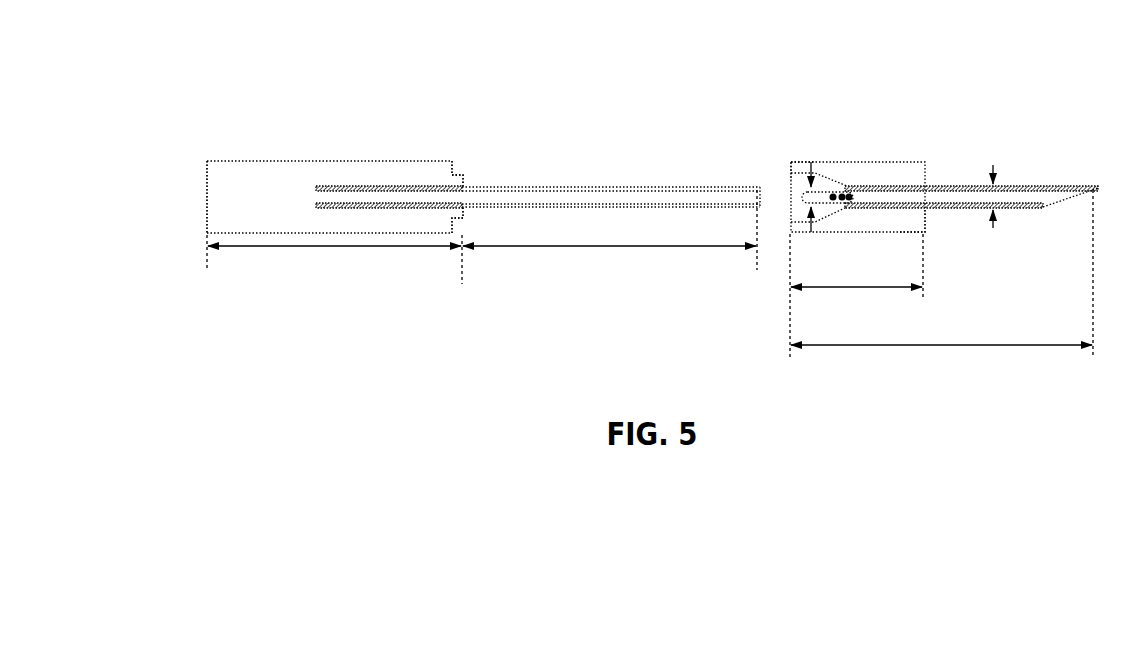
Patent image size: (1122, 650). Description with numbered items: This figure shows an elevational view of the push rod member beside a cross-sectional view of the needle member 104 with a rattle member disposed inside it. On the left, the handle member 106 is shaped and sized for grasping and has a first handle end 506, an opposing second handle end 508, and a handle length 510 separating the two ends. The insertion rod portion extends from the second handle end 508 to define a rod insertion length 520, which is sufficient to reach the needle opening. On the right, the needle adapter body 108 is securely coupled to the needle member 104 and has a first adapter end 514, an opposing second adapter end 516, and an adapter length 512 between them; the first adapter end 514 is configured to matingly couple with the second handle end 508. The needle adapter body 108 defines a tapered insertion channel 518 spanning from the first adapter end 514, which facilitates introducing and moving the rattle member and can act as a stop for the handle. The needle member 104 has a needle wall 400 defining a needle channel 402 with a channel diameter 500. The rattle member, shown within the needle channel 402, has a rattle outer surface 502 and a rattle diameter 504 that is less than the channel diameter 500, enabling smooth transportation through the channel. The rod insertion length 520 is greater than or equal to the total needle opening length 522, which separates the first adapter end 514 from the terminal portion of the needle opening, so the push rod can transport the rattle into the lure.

The needle member 104 is at (961, 186).
The handle member 106 is at (334, 170).
The needle adapter body 108 is at (900, 170).
The needle wall 400 is at (1018, 187).
The needle channel 402 is at (881, 196).
The channel diameter 500 is at (995, 209).
The rattle outer surface 502 is at (826, 207).
The rattle diameter 504 is at (813, 184).
The first handle end 506 is at (209, 159).
The second handle end 508 is at (467, 175).
The handle length 510 is at (347, 250).
The adapter length 512 is at (912, 288).
The first adapter end 514 is at (784, 156).
The second adapter end 516 is at (927, 238).
The tapered insertion channel 518 is at (795, 201).
The rod insertion length 520 is at (543, 248).
The total needle opening length 522 is at (888, 346).